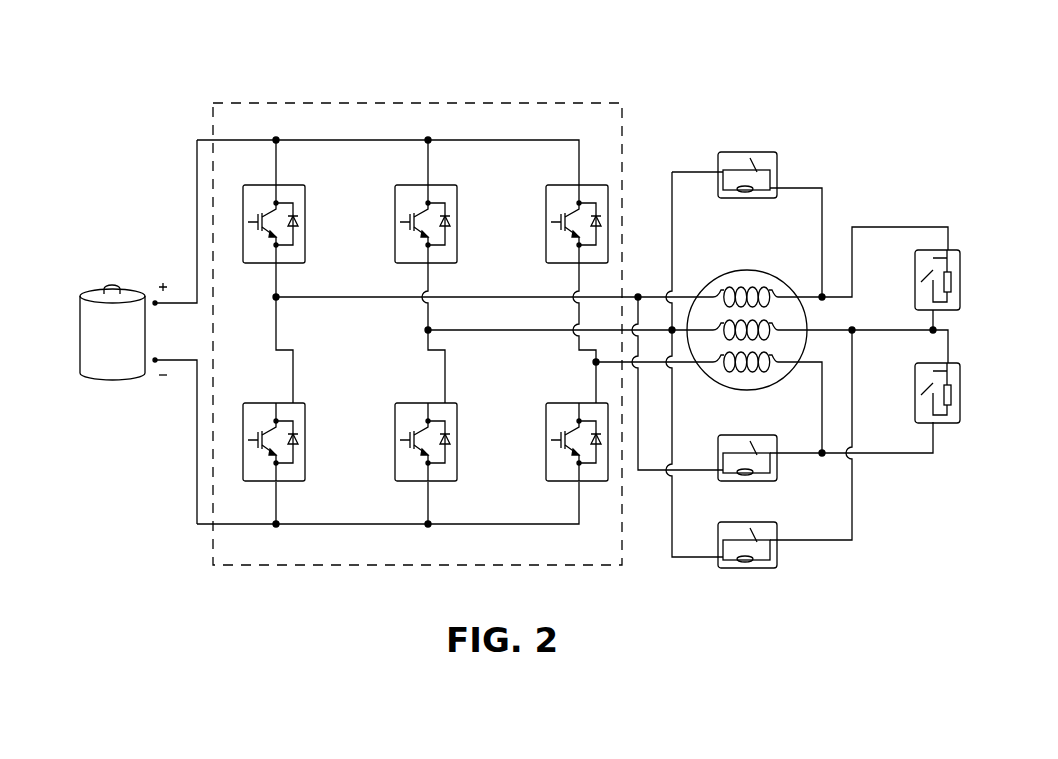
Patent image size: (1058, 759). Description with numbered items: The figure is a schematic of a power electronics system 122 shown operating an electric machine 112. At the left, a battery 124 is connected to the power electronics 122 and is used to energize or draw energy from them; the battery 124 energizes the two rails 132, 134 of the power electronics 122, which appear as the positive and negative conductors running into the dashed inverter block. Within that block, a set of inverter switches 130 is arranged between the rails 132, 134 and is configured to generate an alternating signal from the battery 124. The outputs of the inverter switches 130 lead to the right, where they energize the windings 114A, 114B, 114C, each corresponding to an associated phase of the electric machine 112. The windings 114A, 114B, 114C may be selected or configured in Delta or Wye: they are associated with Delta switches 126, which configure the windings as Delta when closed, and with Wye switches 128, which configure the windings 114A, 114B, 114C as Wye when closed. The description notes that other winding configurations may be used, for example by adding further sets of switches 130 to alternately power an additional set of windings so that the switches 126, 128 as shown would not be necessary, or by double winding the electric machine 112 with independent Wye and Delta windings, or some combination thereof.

The electric machine 112 is at (759, 267).
The winding 114A is at (747, 287).
The winding 114B is at (776, 322).
The winding 114C is at (733, 372).
The power electronics system 122 is at (700, 65).
The battery 124 is at (112, 284).
The Delta switches 126 is at (753, 150).
The Wye switches 128 is at (915, 264).
The inverter switches 130 is at (430, 93).
The rail 132 is at (197, 452).
The rail 134 is at (197, 222).